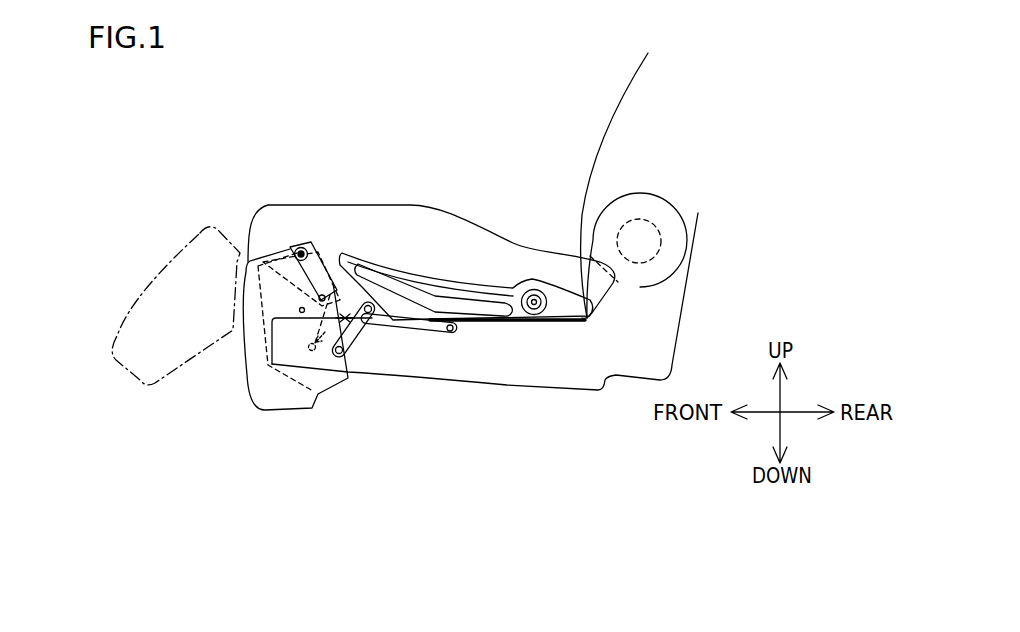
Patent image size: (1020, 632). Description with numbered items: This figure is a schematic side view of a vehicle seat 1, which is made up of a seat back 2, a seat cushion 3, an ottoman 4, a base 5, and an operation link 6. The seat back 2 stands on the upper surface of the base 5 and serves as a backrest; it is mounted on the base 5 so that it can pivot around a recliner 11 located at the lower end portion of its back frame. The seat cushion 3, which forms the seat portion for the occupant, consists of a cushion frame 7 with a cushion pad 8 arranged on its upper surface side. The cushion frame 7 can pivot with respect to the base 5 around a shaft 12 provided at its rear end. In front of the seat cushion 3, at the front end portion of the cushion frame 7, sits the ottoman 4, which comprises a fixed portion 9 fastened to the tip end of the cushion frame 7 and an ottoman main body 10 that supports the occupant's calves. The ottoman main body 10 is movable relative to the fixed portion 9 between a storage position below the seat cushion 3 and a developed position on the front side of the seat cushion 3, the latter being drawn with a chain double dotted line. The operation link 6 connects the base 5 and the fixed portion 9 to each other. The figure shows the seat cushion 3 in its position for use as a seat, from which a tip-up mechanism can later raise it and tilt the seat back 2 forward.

The vehicle seat 1 is at (262, 137).
The seat back 2 is at (580, 252).
The seat cushion 3 is at (475, 166).
The ottoman 4 is at (307, 167).
The base 5 is at (389, 350).
The operation link 6 is at (355, 302).
The cushion frame 7 is at (472, 287).
The cushion pad 8 is at (427, 238).
The fixed portion 9 is at (299, 245).
The ottoman main body 10 is at (248, 262).
The recliner 11 is at (661, 241).
The shaft 12 is at (536, 316).